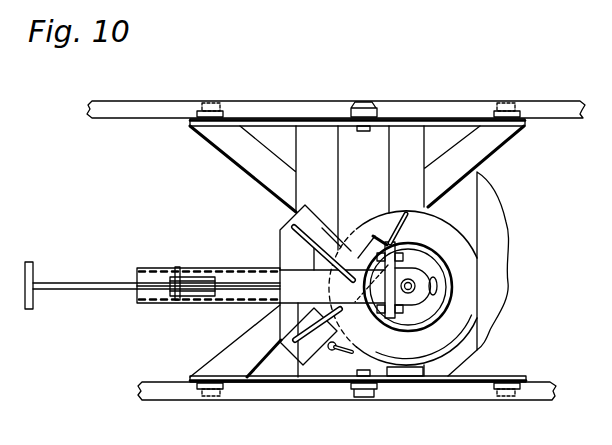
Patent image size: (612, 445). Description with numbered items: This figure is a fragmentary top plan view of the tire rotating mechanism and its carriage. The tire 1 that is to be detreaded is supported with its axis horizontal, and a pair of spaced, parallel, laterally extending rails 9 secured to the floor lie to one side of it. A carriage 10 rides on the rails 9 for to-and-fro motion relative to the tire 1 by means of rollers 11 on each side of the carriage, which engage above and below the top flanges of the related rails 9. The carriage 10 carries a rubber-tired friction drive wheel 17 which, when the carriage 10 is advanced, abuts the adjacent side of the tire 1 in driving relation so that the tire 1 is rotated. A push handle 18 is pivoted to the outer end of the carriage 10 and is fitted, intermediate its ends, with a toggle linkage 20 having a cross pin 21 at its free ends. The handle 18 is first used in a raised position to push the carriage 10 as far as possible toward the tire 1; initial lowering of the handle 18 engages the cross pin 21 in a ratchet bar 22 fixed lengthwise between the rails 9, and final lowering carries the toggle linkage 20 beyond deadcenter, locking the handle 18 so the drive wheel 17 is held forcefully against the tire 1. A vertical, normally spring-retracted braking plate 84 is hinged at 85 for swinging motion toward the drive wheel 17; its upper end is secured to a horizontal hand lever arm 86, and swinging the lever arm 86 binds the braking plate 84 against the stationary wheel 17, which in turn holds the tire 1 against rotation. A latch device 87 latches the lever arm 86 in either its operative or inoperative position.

The tire 1 is at (500, 254).
The rails 9 is at (130, 104).
The carriage 10 is at (250, 184).
The rollers 11 is at (222, 106).
The friction drive wheel 17 is at (463, 304).
The push handle 18 is at (92, 282).
The toggle linkage 20 is at (198, 292).
The cross pin 21 is at (175, 304).
The ratchet bar 22 is at (149, 304).
The braking plate 84 is at (336, 344).
The hinge 85 is at (328, 350).
The hand lever arm 86 is at (394, 242).
The latch device 87 is at (370, 238).